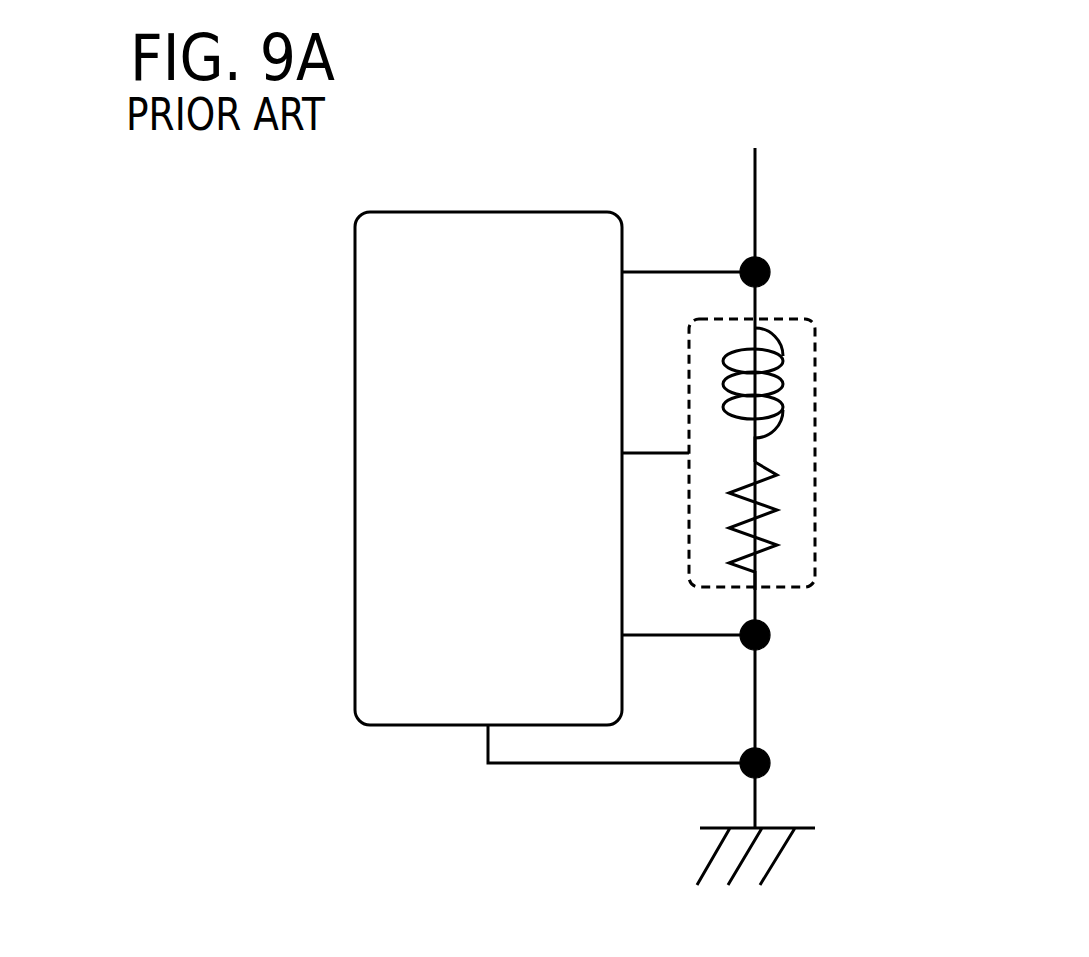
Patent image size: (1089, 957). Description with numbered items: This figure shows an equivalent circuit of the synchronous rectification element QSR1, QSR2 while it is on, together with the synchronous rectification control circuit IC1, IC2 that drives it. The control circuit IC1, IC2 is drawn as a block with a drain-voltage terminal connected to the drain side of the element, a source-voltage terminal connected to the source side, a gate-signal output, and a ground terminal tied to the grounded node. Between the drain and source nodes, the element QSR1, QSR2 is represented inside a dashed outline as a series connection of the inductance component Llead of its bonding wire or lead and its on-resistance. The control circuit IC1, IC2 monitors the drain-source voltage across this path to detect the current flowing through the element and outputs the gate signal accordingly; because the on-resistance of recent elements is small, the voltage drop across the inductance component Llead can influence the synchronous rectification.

The synchronous rectification control circuit IC1 is at (514, 420).
The synchronous rectification control circuit IC2 is at (473, 212).
The synchronous rectification element QSR1 is at (857, 400).
The synchronous rectification element QSR2 is at (857, 400).
The inductance component Llead is at (824, 395).